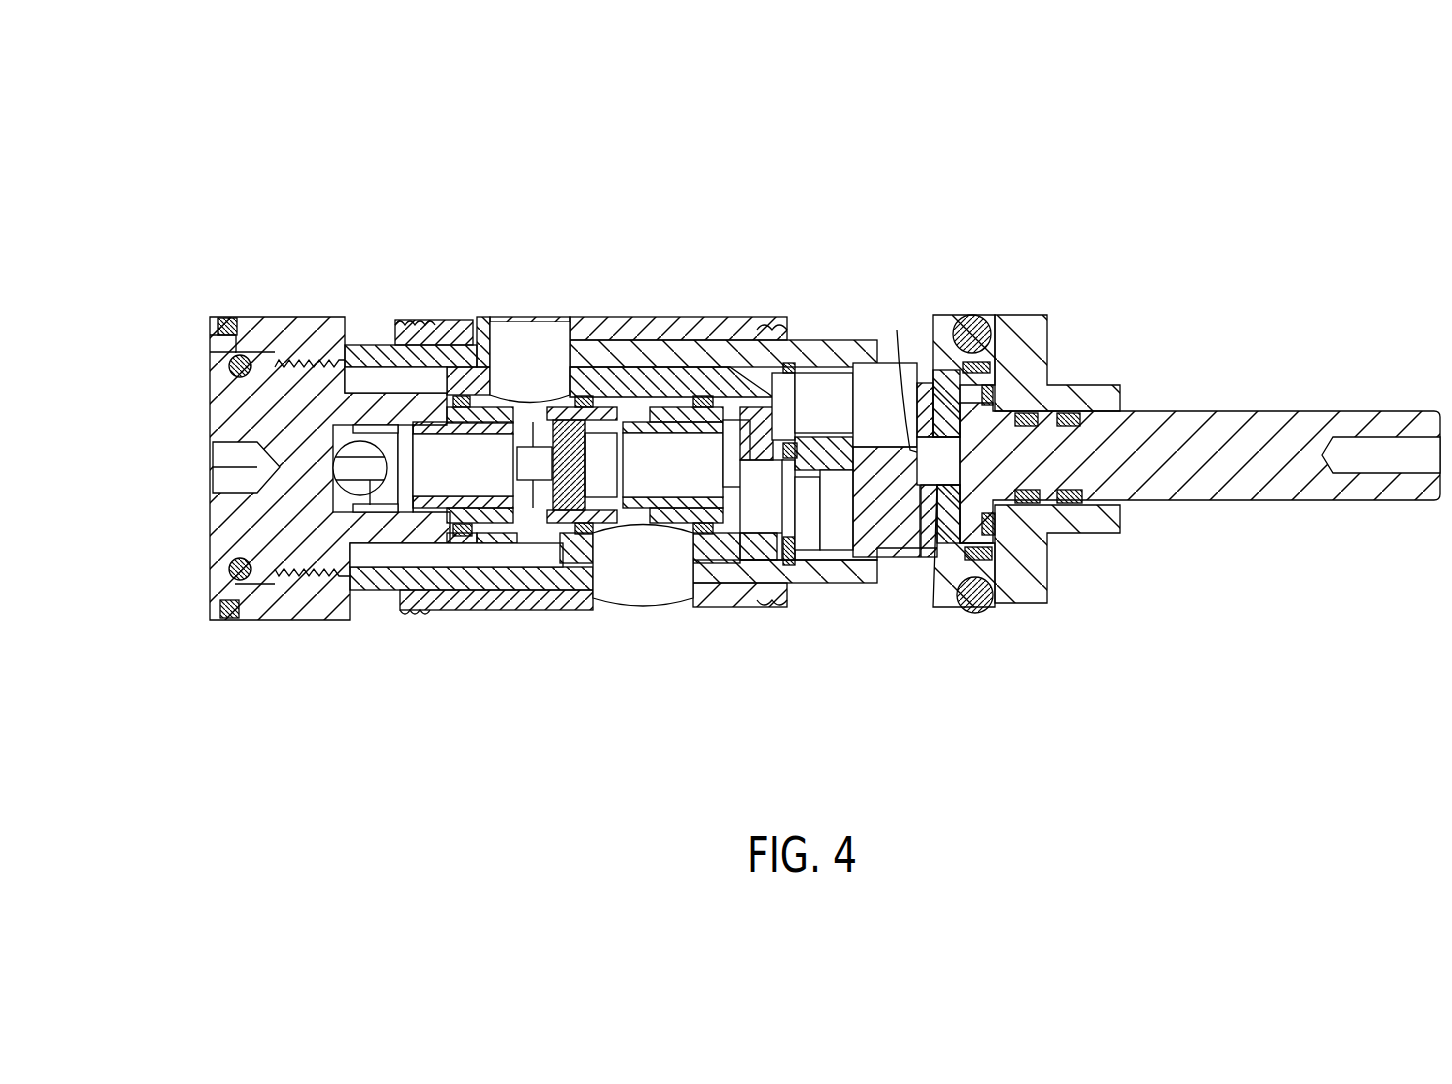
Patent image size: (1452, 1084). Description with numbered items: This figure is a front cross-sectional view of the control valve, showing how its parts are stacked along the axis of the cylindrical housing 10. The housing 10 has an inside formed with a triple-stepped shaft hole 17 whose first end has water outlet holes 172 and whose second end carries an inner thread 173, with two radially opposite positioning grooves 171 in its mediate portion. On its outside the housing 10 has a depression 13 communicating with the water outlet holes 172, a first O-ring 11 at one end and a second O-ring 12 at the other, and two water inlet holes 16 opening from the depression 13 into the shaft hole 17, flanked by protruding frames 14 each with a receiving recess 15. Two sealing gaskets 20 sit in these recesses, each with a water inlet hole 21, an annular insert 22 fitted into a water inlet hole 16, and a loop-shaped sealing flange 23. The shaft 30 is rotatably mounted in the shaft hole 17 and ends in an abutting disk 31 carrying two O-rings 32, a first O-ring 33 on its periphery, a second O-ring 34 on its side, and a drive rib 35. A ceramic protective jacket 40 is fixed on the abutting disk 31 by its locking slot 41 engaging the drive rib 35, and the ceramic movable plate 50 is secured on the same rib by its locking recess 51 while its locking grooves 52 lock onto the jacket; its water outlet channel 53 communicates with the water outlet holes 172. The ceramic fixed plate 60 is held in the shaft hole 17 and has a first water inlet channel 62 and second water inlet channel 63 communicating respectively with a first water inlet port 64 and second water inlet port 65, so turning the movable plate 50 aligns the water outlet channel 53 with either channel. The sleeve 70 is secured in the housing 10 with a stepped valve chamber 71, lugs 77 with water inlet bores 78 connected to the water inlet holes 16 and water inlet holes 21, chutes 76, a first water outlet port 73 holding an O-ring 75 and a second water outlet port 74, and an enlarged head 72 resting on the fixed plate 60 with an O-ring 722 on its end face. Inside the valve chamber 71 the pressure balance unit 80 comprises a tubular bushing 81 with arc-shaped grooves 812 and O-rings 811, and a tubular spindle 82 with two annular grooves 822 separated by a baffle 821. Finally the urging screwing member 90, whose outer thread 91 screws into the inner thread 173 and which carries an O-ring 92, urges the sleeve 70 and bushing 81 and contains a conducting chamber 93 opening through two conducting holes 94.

The housing 10 is at (329, 314).
The first O-ring 11 is at (973, 315).
The second O-ring 12 is at (229, 318).
The depression 13 is at (820, 390).
The protruding frames 14 is at (395, 318).
The receiving recess 15 is at (620, 345).
The water inlet holes 16 is at (454, 367).
The shaft hole 17 is at (452, 585).
The sealing gaskets 20 is at (437, 317).
The water inlet hole 21 is at (645, 590).
The annular insert 22 is at (585, 513).
The sealing flange 23 is at (757, 513).
The shaft 30 is at (1280, 409).
The abutting disk 31 is at (960, 607).
The O-rings 32 is at (1070, 503).
The first O-ring 33 is at (975, 370).
The second O-ring 34 is at (995, 392).
The drive rib 35 is at (893, 362).
The protective jacket 40 is at (942, 372).
The locking slot 41 is at (985, 462).
The movable plate 50 is at (912, 552).
The locking recess 51 is at (928, 545).
The locking grooves 52 is at (910, 330).
The water outlet channel 53 is at (884, 430).
The fixed plate 60 is at (843, 520).
The first water inlet channel 62 is at (860, 530).
The second water inlet channel 63 is at (842, 390).
The first water inlet port 64 is at (817, 560).
The second water inlet port 65 is at (790, 363).
The sleeve 70 is at (650, 380).
The valve chamber 71 is at (622, 515).
The enlarged head 72 is at (763, 520).
The first water outlet port 73 is at (747, 527).
The second water outlet port 74 is at (753, 395).
The O-ring 75 is at (800, 540).
The chutes 76 is at (462, 396).
The lugs 77 is at (507, 378).
The water inlet bore 78 is at (673, 563).
The pressure balance unit 80 is at (672, 365).
The bushing 81 is at (558, 560).
The spindle 82 is at (600, 410).
The urging screwing member 90 is at (208, 373).
The outer thread 91 is at (240, 467).
The O-ring 92 is at (232, 620).
The conducting chamber 93 is at (358, 441).
The conducting holes 94 is at (355, 489).
The positioning grooves 171 is at (370, 520).
The water outlet holes 172 is at (882, 355).
The inner thread 173 is at (278, 318).
The O-ring 722 is at (785, 325).
The O-rings 811 is at (465, 563).
The arc-shaped grooves 812 is at (527, 517).
The baffle 821 is at (567, 420).
The annular grooves 822 is at (527, 407).